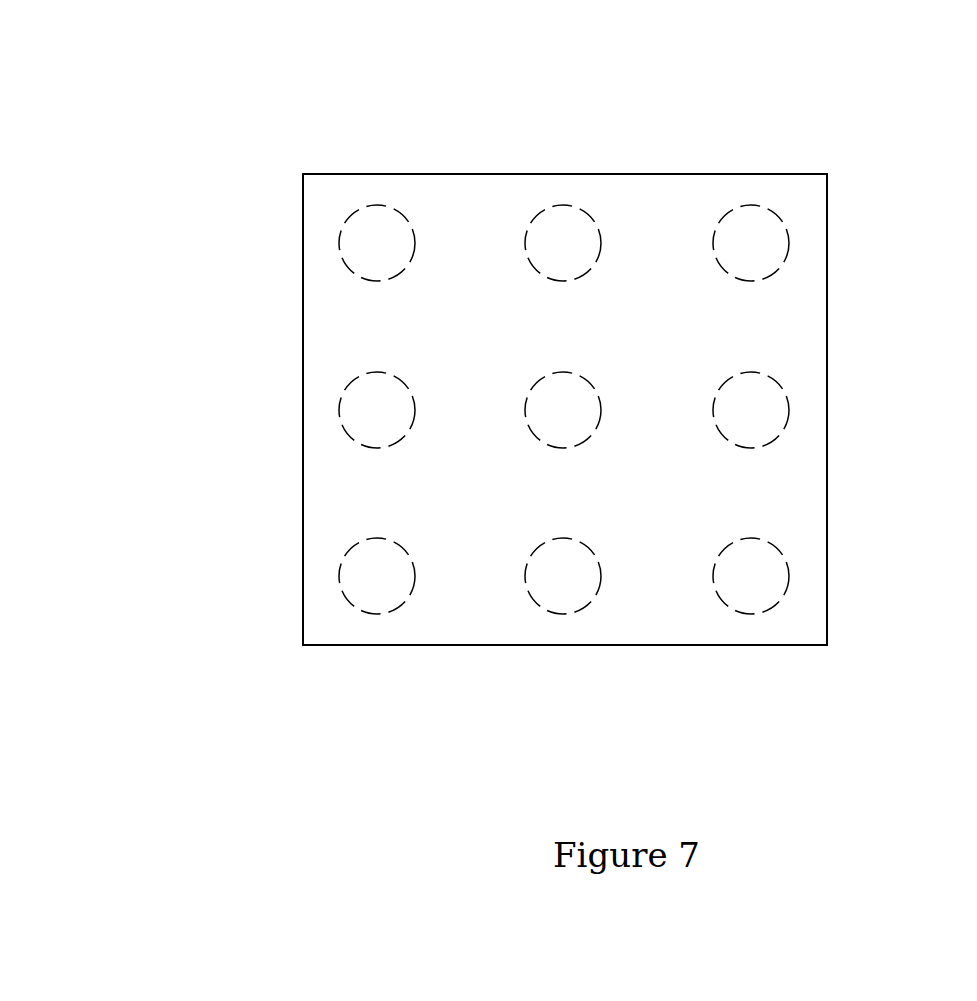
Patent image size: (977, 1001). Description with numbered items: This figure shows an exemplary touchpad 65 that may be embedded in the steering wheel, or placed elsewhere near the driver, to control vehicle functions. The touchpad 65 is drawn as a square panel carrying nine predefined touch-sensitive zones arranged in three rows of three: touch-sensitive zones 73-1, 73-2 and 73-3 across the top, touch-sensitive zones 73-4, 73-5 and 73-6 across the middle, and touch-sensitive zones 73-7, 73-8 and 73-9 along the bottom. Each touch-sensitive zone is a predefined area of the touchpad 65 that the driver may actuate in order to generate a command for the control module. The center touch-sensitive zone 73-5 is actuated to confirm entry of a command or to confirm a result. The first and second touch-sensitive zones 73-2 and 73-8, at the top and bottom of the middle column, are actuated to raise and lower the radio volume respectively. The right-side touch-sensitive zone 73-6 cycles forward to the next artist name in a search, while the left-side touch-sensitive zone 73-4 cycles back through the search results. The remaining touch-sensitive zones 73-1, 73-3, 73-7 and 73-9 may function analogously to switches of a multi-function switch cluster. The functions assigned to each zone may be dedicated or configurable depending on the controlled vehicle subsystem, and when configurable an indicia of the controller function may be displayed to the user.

The touchpad 65 is at (433, 174).
The touch-sensitive zone 73-1 is at (339, 243).
The first touch-sensitive zone 73-2 is at (567, 205).
The touch-sensitive zone 73-3 is at (789, 243).
The left-side touch-sensitive zone 73-4 is at (339, 410).
The center touch-sensitive zone 73-5 is at (565, 372).
The right-side touch-sensitive zone 73-6 is at (789, 410).
The touch-sensitive zone 73-7 is at (339, 576).
The second touch-sensitive zone 73-8 is at (563, 614).
The touch-sensitive zone 73-9 is at (789, 576).